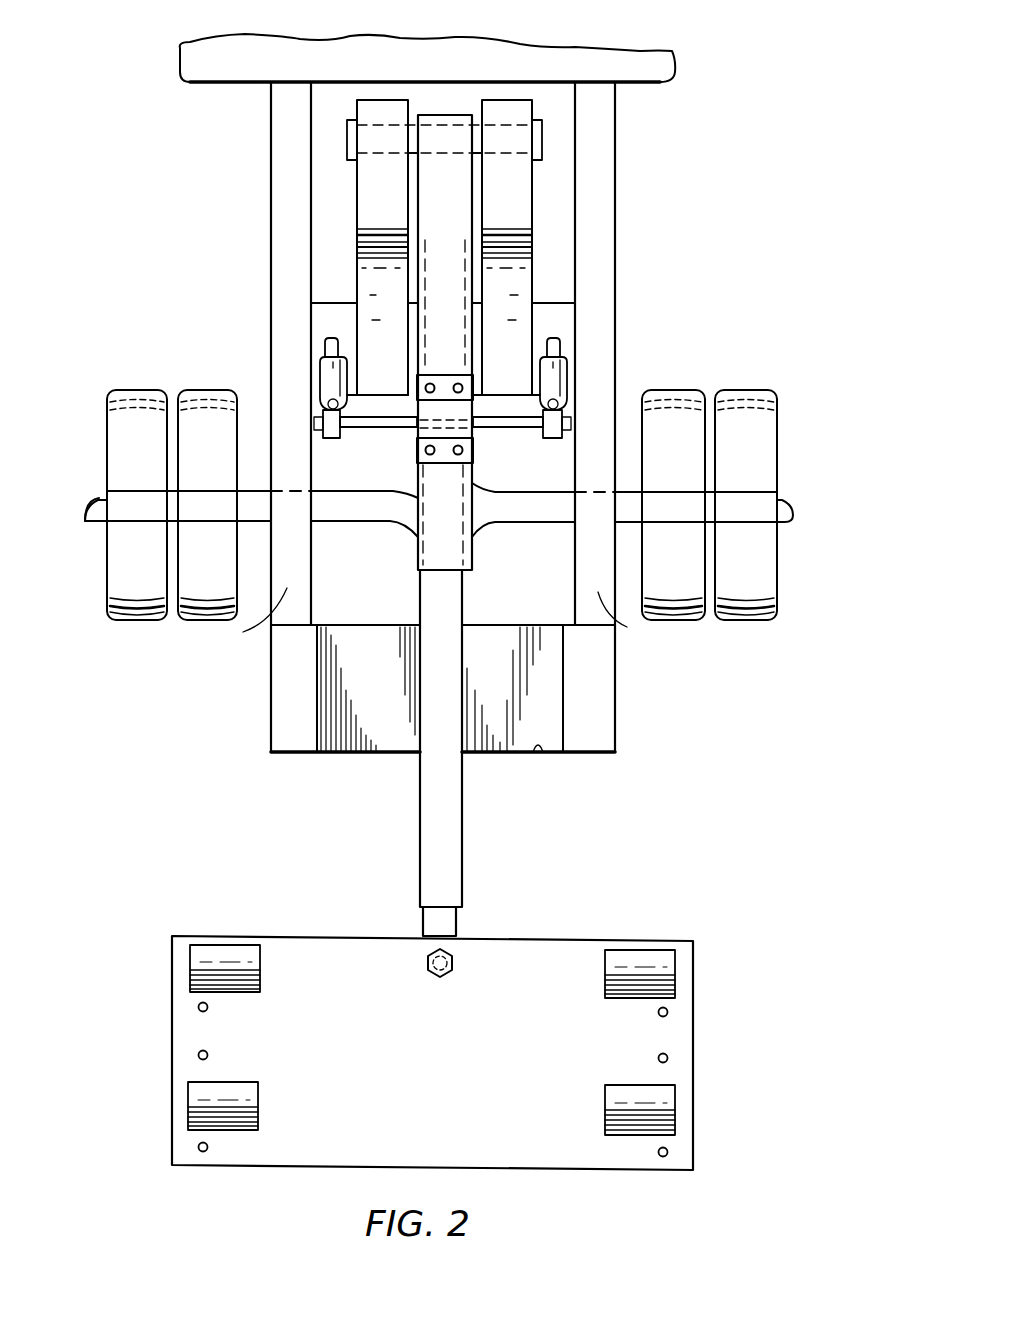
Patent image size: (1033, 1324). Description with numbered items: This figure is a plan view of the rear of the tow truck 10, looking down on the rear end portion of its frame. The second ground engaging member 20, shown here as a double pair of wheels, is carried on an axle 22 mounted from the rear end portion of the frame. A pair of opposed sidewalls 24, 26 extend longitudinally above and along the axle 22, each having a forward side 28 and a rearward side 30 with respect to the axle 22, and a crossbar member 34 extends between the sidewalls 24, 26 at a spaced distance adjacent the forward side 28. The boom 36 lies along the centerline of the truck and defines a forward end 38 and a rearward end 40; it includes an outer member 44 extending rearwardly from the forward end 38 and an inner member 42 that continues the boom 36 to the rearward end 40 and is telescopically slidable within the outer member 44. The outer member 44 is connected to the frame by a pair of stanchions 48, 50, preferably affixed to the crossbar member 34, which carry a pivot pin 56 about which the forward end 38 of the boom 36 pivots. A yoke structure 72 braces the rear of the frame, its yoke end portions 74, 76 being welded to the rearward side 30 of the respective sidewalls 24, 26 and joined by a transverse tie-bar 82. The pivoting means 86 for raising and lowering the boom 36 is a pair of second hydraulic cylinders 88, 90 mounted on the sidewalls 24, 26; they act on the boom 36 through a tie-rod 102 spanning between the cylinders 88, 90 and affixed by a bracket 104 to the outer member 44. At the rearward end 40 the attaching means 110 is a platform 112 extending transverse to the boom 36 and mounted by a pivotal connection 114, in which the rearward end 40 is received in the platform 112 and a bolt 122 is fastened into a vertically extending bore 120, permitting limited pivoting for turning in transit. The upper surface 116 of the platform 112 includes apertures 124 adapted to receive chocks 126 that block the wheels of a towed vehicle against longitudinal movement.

The tow truck 10 is at (733, 58).
The second ground engaging member 20 is at (463, 541).
The axle 22 is at (480, 532).
The sidewall 24 is at (235, 268).
The sidewall 26 is at (657, 262).
The forward side 28 is at (442, 505).
The rearward side 30 is at (432, 624).
The crossbar member 34 is at (552, 300).
The boom 36 is at (432, 326).
The forward end 38 is at (449, 108).
The rearward end 40 is at (414, 753).
The inner member 42 is at (447, 820).
The outer member 44 is at (433, 488).
The stanchion 48 is at (360, 177).
The stanchion 50 is at (522, 190).
The pivot pin 56 is at (414, 128).
The yoke structure 72 is at (431, 715).
The yoke end portion 74 is at (283, 708).
The yoke end portion 76 is at (585, 710).
The tie-bar 82 is at (540, 752).
The pivoting means 86 is at (447, 384).
The second hydraulic cylinder 88 is at (325, 372).
The second hydraulic cylinder 90 is at (558, 378).
The tie-rod 102 is at (535, 432).
The bracket 104 is at (445, 383).
The attaching means 110 is at (495, 1039).
The platform 112 is at (697, 982).
The pivotal connection 114 is at (446, 927).
The upper surface 116 is at (398, 1116).
The bore 120 is at (436, 963).
The bolt 122 is at (425, 968).
The apertures 124 is at (208, 1053).
The chocks 126 is at (237, 957).